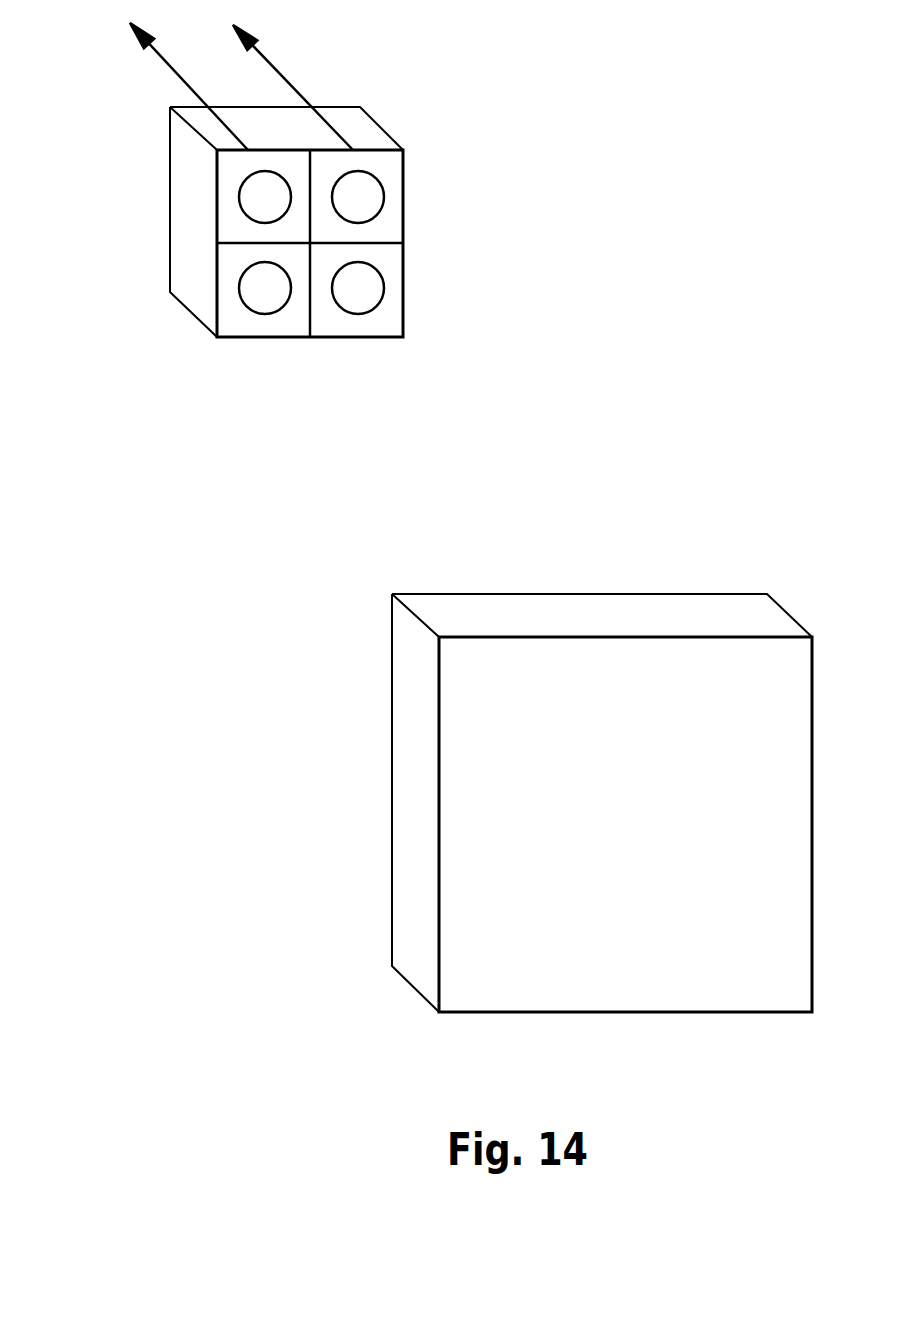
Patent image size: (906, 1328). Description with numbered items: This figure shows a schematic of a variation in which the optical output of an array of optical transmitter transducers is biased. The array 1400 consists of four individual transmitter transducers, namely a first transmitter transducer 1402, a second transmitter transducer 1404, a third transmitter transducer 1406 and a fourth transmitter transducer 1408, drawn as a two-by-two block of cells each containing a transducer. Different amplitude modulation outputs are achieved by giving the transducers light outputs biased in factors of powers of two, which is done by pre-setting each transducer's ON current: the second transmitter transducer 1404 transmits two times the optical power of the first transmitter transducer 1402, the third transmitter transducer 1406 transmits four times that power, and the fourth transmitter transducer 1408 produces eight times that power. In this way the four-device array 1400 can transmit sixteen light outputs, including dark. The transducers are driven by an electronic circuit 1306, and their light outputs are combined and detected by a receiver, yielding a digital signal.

The electronic circuit 1306 is at (245, 86).
The array of transmitter transducers 1400 is at (403, 150).
The first transmitter transducer 1402 is at (223, 195).
The second transmitter transducer 1404 is at (223, 312).
The third transmitter transducer 1406 is at (397, 207).
The fourth transmitter transducer 1408 is at (397, 302).